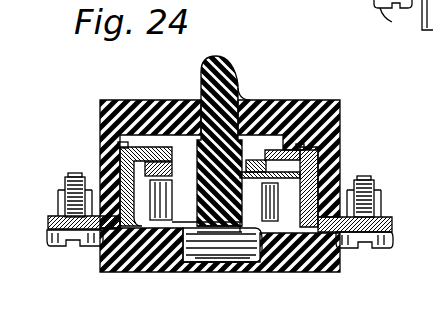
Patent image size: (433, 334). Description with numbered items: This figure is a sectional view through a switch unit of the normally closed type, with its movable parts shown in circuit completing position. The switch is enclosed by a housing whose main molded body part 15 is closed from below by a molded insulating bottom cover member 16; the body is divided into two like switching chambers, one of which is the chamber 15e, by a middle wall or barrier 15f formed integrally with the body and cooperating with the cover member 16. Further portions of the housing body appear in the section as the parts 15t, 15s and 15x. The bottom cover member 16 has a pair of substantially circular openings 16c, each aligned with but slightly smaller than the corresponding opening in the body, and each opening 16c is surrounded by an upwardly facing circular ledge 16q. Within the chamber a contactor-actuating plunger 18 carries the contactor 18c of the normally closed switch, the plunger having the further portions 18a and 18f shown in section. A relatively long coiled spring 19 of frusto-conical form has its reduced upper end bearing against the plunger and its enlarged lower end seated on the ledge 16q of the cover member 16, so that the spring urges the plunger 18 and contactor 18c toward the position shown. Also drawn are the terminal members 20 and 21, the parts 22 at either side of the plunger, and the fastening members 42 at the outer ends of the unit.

The main molded body part of housing 15 is at (325, 110).
The housing top wall 15t is at (187, 107).
The housing shoulder 15s is at (258, 112).
The housing recess 15x is at (118, 145).
The switching chamber 15e is at (152, 265).
The middle wall or barrier 15f is at (271, 266).
The molded insulating bottom cover member 16 is at (307, 272).
The substantially circular opening 16c is at (233, 266).
The upwardly facing circular ledge 16q is at (238, 262).
The plunger 18 is at (237, 70).
The shaft fillet 18a is at (241, 95).
The contactor 18c is at (340, 170).
The shaft lower flange 18f is at (210, 258).
The coiled spring 19 is at (200, 264).
The bolt 20 is at (388, 226).
The bolt 21 is at (48, 222).
The bearing 22 is at (100, 166).
The bolt flange nut 42 is at (88, 248).